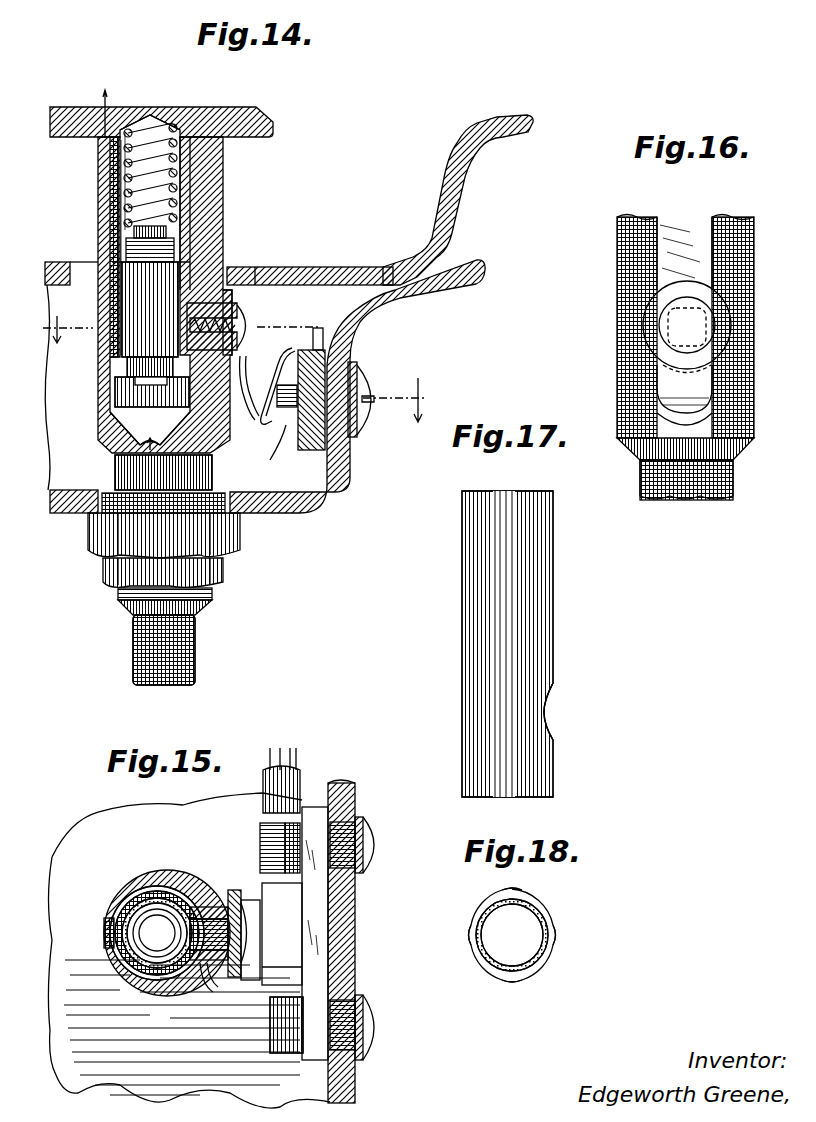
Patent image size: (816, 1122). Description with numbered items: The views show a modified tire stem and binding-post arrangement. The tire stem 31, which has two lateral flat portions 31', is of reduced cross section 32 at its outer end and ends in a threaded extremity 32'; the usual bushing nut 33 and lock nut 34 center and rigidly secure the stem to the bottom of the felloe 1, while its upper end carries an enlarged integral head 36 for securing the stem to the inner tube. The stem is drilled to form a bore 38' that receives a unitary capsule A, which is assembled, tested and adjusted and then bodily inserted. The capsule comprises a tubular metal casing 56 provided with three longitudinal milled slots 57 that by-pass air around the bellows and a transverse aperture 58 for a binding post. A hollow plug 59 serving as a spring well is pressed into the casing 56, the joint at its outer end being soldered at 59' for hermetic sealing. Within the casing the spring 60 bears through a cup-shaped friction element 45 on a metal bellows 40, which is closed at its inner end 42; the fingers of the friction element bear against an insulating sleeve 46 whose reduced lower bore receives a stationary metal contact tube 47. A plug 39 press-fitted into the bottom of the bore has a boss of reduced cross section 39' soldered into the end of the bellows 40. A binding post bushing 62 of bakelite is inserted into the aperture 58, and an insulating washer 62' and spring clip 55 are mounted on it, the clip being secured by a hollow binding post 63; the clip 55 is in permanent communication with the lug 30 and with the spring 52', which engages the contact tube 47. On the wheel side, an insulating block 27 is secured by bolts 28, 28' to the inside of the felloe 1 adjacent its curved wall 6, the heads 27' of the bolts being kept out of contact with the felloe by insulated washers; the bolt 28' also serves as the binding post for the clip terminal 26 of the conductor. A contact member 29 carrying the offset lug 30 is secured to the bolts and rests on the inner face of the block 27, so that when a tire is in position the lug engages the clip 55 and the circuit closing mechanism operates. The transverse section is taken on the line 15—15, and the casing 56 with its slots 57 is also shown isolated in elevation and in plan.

In FIG. 14, the supporting bracket 1 is at (346, 337).
In FIG. 15, the supporting bracket 1 is at (342, 895).
In FIG. 14, the curved bracket arm 6 is at (438, 214).
In FIG. 14, the section line 15— 15 is at (235, 369).
In FIG. 15, the clip terminal 26 is at (265, 823).
In FIG. 14, the insulating block 27 is at (291, 378).
In FIG. 15, the insulating block 27 is at (347, 933).
In FIG. 15, the screw head 27' is at (381, 899).
In FIG. 15, the bolt 28 is at (387, 1027).
In FIG. 15, the bolt 28' is at (261, 848).
In FIG. 14, the contact member 29 is at (292, 350).
In FIG. 15, the contact member 29 is at (300, 968).
In FIG. 14, the offset lug 30 is at (273, 424).
In FIG. 15, the offset lug 30 is at (258, 980).
In FIG. 14, the tire stem 31 is at (204, 295).
In FIG. 16, the tire stem 31 is at (702, 338).
In FIG. 15, the tire stem 31 is at (167, 916).
In FIG. 14, the lateral flat portions 31' is at (181, 247).
In FIG. 16, the lateral flat portions 31' is at (684, 235).
In FIG. 15, the lateral flat portions 31' is at (134, 933).
In FIG. 14, the reduced cross section of stem 32 is at (145, 488).
In FIG. 16, the reduced cross section of stem 32 is at (704, 480).
In FIG. 14, the threaded stem 32' is at (177, 636).
In FIG. 14, the bushing nut 33 is at (90, 538).
In FIG. 14, the lock nut 34 is at (104, 577).
In FIG. 14, the enlarged integral head 36 is at (268, 118).
In FIG. 14, the bore of stem 38' is at (151, 262).
In FIG. 14, the plug member 39 is at (122, 392).
In FIG. 14, the boss of reduced cross section 39' is at (151, 389).
In FIG. 14, the metal bellows 40 is at (125, 255).
In FIG. 15, the metal bellows 40 is at (140, 890).
In FIG. 14, the inner end of bellows 42 is at (134, 228).
In FIG. 14, the friction element 45 is at (182, 242).
In FIG. 14, the insulating sleeve 46 is at (125, 368).
In FIG. 15, the insulating sleeve 46 is at (125, 963).
In FIG. 14, the metal contact tube 47 is at (118, 272).
In FIG. 15, the metal contact tube 47 is at (135, 975).
In FIG. 14, the spring 52' is at (243, 320).
In FIG. 14, the spring clip 55 is at (250, 381).
In FIG. 16, the spring clip 55 is at (668, 388).
In FIG. 15, the spring clip 55 is at (222, 995).
In FIG. 14, the tubular metal casing 56 is at (190, 189).
In FIG. 17, the tubular metal casing 56 is at (466, 532).
In FIG. 15, the tubular metal casing 56 is at (125, 890).
In FIG. 18, the tubular metal casing 56 is at (543, 966).
In FIG. 14, the longitudinal milled slots 57 is at (112, 183).
In FIG. 17, the longitudinal milled slots 57 is at (510, 497).
In FIG. 15, the longitudinal milled slots 57 is at (160, 880).
In FIG. 18, the longitudinal milled slots 57 is at (515, 889).
In FIG. 17, the transverse aperture 58 is at (550, 718).
In FIG. 14, the hollow plug 59 is at (152, 145).
In FIG. 18, the hollow plug 59 is at (540, 935).
In FIG. 14, the soldered joint 59' is at (117, 138).
In FIG. 18, the soldered joint 59' is at (539, 935).
In FIG. 14, the spring 60 is at (155, 128).
In FIG. 14, the binding post bushing 62 is at (237, 301).
In FIG. 16, the binding post bushing 62 is at (719, 353).
In FIG. 15, the binding post bushing 62 is at (251, 1019).
In FIG. 14, the insulating washer 62' is at (310, 247).
In FIG. 15, the insulating washer 62' is at (209, 901).
In FIG. 14, the hollow binding post 63 is at (245, 315).
In FIG. 16, the hollow binding post 63 is at (678, 337).
In FIG. 15, the hollow binding post 63 is at (250, 935).
In FIG. 17, the capsule A is at (568, 574).